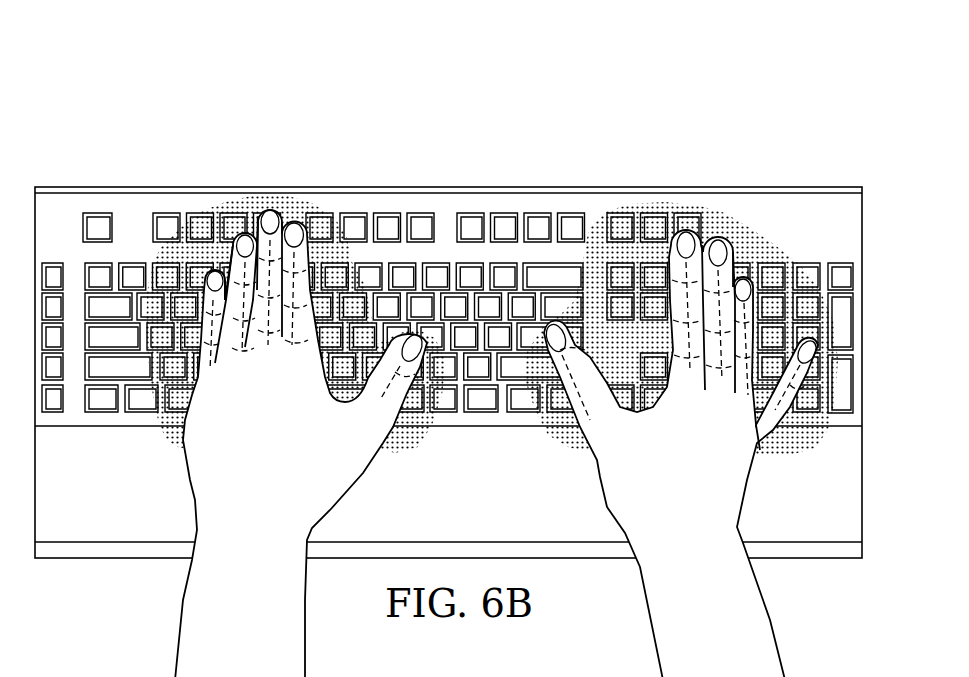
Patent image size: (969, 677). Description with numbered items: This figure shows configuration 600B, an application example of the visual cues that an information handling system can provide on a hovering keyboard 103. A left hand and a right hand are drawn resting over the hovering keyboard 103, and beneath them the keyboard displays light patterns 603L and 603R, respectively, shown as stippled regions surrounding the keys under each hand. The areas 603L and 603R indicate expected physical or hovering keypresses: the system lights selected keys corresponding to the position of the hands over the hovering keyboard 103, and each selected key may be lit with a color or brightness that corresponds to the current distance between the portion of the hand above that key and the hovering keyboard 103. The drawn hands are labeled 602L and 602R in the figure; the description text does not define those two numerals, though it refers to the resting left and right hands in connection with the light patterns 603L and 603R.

The configuration 600B is at (170, 96).
The hovering keyboard 103 is at (446, 180).
The light pattern 603L is at (198, 232).
The light pattern 603R is at (750, 232).
The left hand 602L is at (189, 483).
The right hand 602R is at (748, 480).